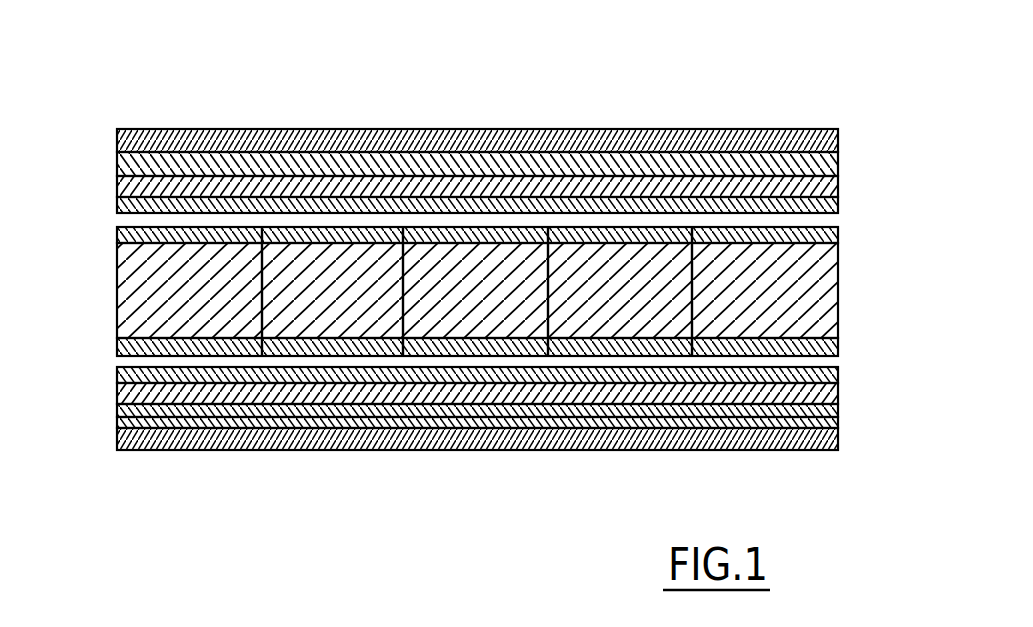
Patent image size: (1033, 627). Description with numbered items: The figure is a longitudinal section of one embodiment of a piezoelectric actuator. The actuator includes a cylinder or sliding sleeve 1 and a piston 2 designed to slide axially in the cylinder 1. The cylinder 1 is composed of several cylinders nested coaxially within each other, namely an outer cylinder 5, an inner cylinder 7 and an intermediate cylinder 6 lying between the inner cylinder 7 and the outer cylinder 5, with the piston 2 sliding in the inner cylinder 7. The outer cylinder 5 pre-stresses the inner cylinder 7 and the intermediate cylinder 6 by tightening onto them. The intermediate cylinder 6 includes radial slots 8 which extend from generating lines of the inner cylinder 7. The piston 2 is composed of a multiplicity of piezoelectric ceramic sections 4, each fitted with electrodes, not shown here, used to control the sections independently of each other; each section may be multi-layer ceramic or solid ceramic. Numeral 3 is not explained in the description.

The cylinder 1 is at (465, 450).
The piston 2 is at (152, 318).
The thin adhesive layers 3 is at (155, 235).
The piezoelectric ceramic sections 4 is at (720, 282).
The outer cylinder 5 is at (212, 443).
The intermediate cylinder 6 is at (285, 420).
The inner cylinder 7 is at (343, 392).
The radial slots 8 is at (140, 413).